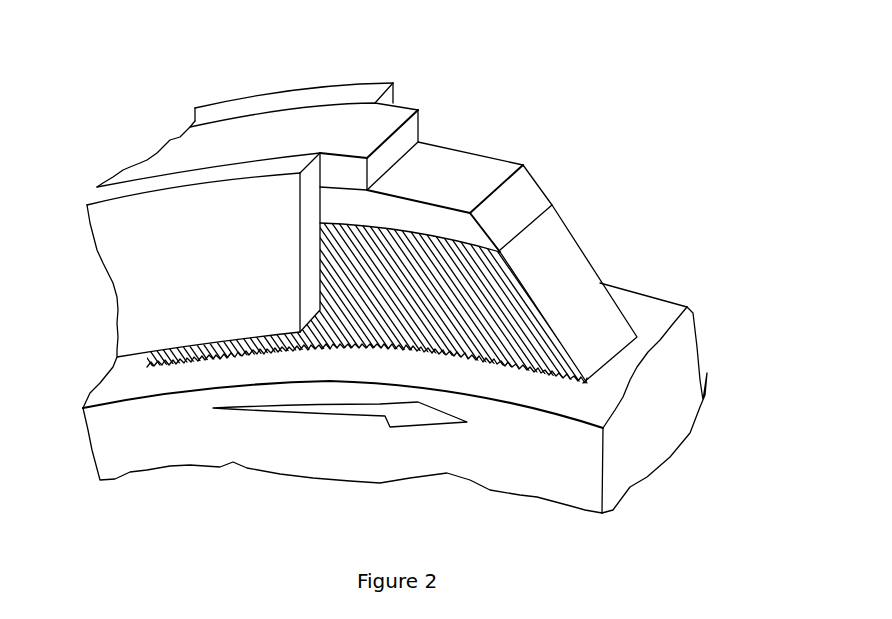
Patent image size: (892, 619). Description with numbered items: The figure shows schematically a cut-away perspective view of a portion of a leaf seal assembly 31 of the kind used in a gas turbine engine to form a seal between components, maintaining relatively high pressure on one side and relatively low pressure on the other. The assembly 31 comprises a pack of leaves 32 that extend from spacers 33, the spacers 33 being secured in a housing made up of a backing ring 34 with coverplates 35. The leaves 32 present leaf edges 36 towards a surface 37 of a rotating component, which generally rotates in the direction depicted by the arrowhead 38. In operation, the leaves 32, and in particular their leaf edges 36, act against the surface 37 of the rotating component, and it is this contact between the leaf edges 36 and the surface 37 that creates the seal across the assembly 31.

The leaf seal assembly 31 is at (455, 103).
The pack of leaves 32 is at (563, 258).
The spacers 33 is at (514, 160).
The backing ring 34 is at (193, 144).
The coverplates 35 is at (295, 95).
The leaf edges 36 is at (617, 360).
The surface 37 is at (510, 388).
The arrowhead 38 is at (261, 415).